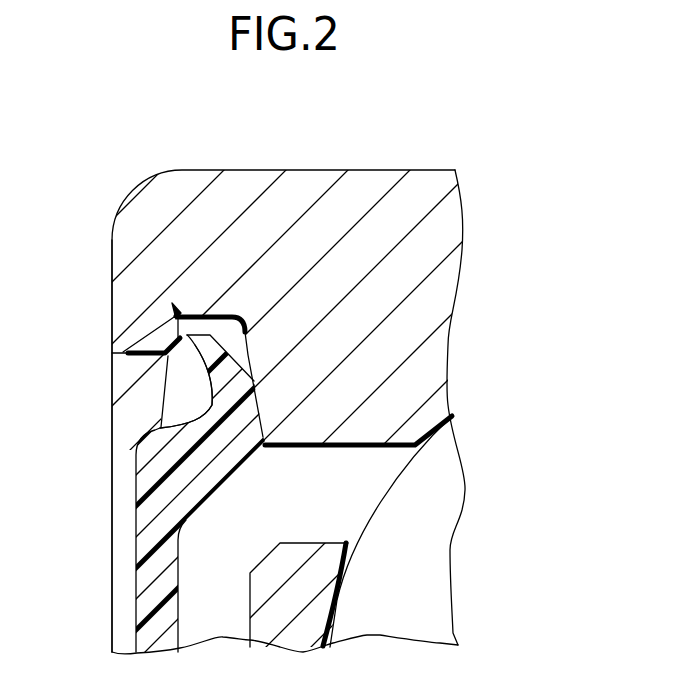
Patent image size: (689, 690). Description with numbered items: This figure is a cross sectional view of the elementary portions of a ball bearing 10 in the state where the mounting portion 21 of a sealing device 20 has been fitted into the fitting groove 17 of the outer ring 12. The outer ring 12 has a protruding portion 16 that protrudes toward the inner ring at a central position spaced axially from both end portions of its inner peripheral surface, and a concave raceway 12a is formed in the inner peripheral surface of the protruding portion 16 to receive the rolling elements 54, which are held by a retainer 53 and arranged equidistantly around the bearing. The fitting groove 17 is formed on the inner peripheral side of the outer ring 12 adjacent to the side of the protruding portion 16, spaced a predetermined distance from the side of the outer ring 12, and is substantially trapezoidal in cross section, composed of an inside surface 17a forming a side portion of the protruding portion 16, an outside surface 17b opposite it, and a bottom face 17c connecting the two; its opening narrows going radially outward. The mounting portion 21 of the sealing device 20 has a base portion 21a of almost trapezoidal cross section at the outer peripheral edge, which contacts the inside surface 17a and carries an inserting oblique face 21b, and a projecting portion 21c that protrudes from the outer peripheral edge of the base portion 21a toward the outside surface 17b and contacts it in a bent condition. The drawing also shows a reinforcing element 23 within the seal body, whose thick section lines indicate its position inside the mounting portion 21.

The ball bearing 10 is at (522, 376).
The outer ring 12 is at (376, 192).
The raceway 12a is at (432, 430).
The protruding portion 16 is at (396, 352).
The fitting groove 17 is at (124, 224).
The inside surface 17a is at (250, 318).
The outside surface 17b is at (170, 320).
The bottom face 17c is at (211, 314).
The sealing device 20 is at (105, 543).
The mounting portion 21 is at (140, 448).
The base portion 21a is at (213, 400).
The inserting oblique face 21b is at (224, 316).
The projecting portion 21c is at (128, 355).
The reinforcing metal ring 23 is at (150, 606).
The retainer 53 is at (267, 590).
The rolling elements 54 is at (430, 522).